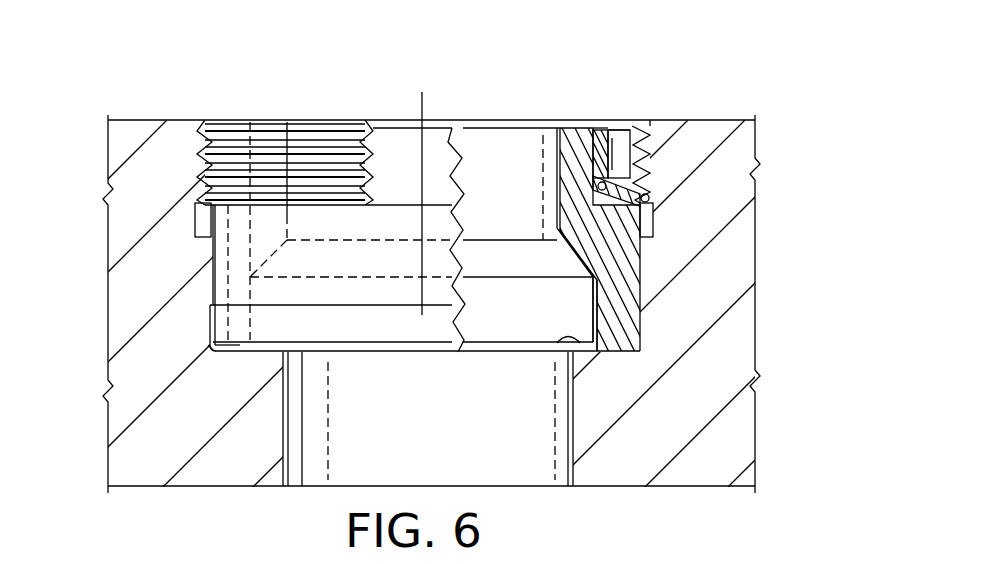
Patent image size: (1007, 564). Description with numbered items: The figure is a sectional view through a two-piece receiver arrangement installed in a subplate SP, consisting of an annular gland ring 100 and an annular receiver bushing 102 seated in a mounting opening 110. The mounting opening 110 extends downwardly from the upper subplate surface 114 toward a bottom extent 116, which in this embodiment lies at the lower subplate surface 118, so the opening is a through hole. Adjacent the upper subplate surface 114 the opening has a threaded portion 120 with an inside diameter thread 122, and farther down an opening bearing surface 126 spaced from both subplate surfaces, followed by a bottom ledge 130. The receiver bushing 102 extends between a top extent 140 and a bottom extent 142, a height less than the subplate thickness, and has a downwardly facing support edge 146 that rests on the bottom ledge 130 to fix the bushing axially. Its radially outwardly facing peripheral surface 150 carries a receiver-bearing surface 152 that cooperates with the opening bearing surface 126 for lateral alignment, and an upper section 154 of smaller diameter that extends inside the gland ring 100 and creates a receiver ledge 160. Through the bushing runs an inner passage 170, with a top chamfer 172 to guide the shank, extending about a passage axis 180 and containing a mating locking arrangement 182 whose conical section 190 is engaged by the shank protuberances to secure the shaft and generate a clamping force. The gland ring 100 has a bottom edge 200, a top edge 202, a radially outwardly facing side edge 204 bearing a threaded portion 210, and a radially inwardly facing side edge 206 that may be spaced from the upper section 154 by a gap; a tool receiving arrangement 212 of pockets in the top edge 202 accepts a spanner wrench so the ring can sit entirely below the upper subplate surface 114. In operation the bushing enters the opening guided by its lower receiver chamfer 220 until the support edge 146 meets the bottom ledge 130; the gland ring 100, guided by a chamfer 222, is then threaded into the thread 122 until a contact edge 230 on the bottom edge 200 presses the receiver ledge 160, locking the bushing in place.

The annular gland ring 100 is at (636, 112).
The receiver bushing 102 is at (382, 113).
The mounting opening 110 is at (252, 112).
The upper subplate surface 114 is at (133, 118).
The bottom extent 116 is at (527, 486).
The lower subplate surface 118 is at (183, 486).
The threaded portion 120 is at (220, 118).
The inside diameter thread 122 is at (647, 170).
The opening bearing surface 126 is at (640, 267).
The bottom ledge 130 is at (557, 337).
The top extent 140 is at (272, 118).
The bottom extent 142 is at (353, 353).
The support edge 146 is at (233, 350).
The peripheral surface 150 is at (203, 279).
The receiver-bearing surface 152 is at (640, 243).
The upper section 154 is at (593, 188).
The receiver ledge 160 is at (647, 197).
The inner passage 170 is at (557, 165).
The top chamfer 172 is at (555, 125).
The passage axis 180 is at (422, 102).
The mating locking arrangement 182 is at (554, 309).
The conical section 190 is at (570, 243).
The bottom edge 200 is at (205, 210).
The top edge 202 is at (600, 128).
The radially outwardly facing side edge 204 is at (200, 138).
The radially inwardly facing side edge 206 is at (597, 166).
The threaded portion 210 is at (338, 165).
The tool receiving arrangement 212 is at (620, 128).
The lower receiver chamfer 220 is at (210, 347).
The chamfer 222 is at (590, 212).
The contact edge 230 is at (305, 206).
The subplate SP is at (760, 296).